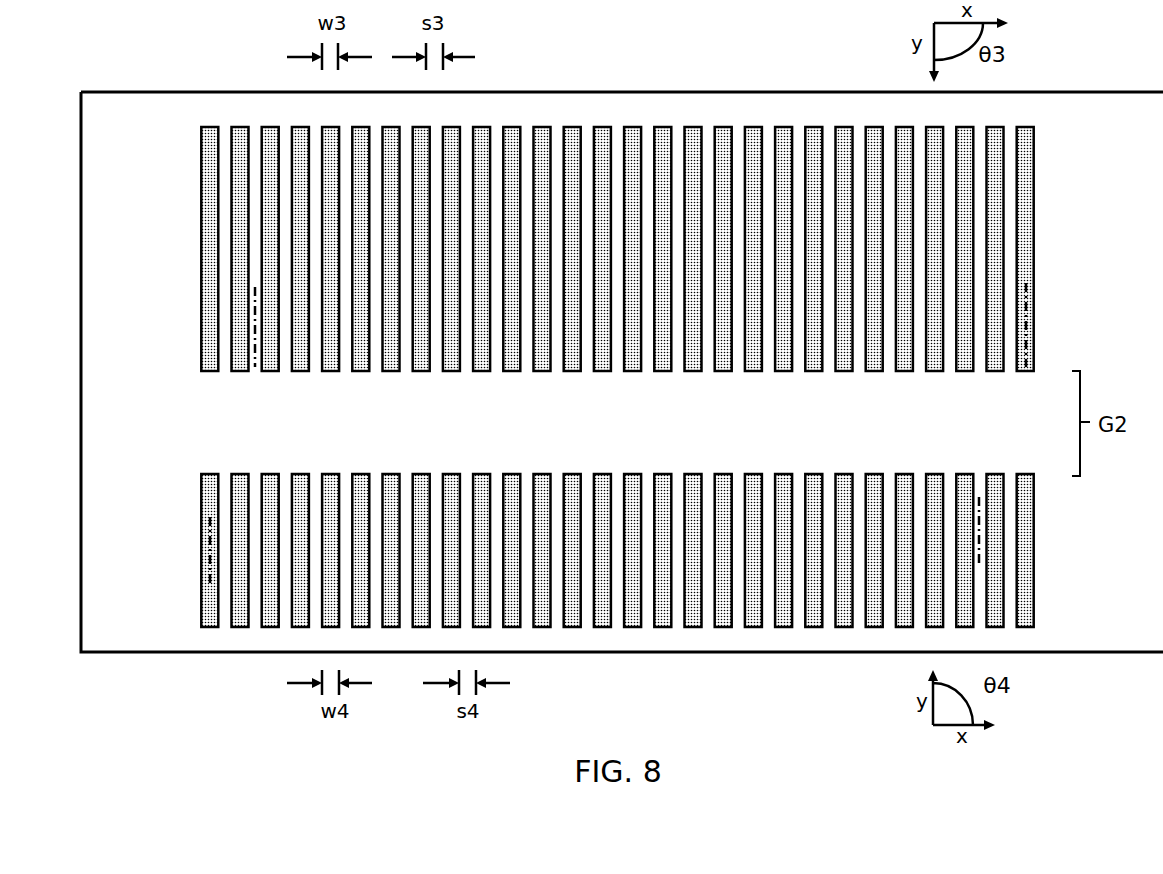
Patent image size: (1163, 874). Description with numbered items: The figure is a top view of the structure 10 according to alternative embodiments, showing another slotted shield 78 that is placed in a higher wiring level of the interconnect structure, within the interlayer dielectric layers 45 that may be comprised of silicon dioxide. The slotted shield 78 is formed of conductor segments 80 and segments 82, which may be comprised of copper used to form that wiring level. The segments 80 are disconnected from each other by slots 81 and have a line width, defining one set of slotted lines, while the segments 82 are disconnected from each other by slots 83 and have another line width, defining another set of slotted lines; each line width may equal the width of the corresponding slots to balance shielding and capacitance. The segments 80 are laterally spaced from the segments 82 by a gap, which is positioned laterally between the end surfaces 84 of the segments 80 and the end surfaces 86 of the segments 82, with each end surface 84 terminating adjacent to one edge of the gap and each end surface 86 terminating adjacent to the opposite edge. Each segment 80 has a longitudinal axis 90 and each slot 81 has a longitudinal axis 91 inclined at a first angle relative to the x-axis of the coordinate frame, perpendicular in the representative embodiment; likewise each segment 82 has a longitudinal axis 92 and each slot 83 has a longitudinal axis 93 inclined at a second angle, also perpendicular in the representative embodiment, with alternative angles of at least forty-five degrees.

The structure 10 is at (186, 74).
The interlayer dielectric layers 45 is at (1107, 629).
The slotted shield 78 is at (615, 276).
The segments 80 is at (268, 268).
The slots 81 is at (257, 217).
The segments 82 is at (243, 606).
The slots 83 is at (256, 516).
The end surface 84 is at (335, 372).
The end surface 86 is at (420, 476).
The longitudinal axis 90 is at (1027, 312).
The longitudinal axis 91 is at (250, 347).
The longitudinal axis 92 is at (210, 552).
The longitudinal axis 93 is at (1000, 551).